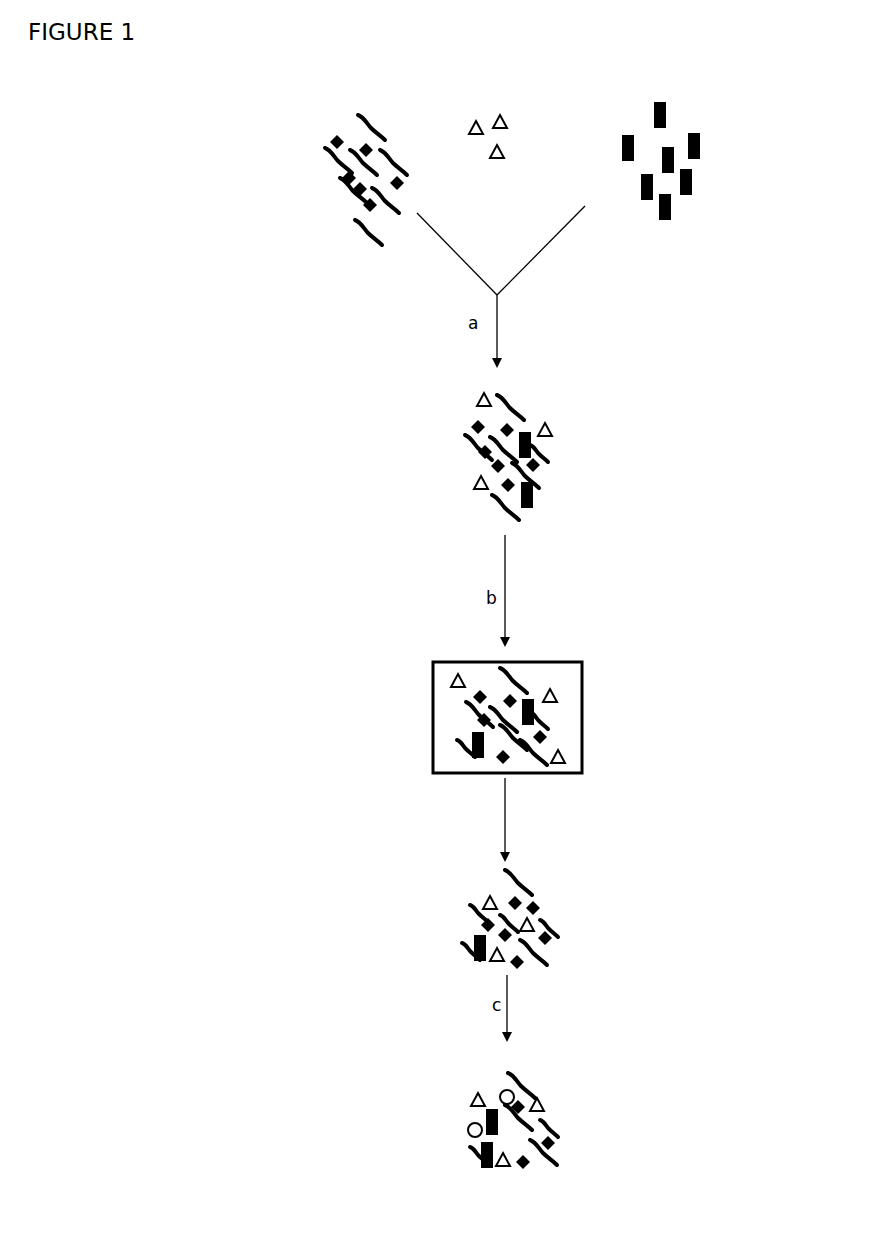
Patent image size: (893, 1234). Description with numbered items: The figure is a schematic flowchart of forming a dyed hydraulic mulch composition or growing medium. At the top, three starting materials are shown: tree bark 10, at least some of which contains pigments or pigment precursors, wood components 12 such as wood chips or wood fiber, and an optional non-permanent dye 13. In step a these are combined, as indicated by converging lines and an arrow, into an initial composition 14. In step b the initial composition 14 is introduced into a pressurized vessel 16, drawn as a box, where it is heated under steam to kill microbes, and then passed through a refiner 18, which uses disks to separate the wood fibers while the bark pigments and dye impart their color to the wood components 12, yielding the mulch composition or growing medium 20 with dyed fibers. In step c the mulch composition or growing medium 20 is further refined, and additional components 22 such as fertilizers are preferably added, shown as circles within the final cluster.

The tree bark 10 is at (705, 135).
The wood components 12 is at (307, 152).
The non-permanent dye 13 is at (510, 112).
The initial composition 14 is at (437, 450).
The pressurized vessel 16 is at (565, 686).
The refiner 18 is at (582, 662).
The mulch composition or growing medium 20 is at (578, 876).
The additional components 22 is at (470, 1130).